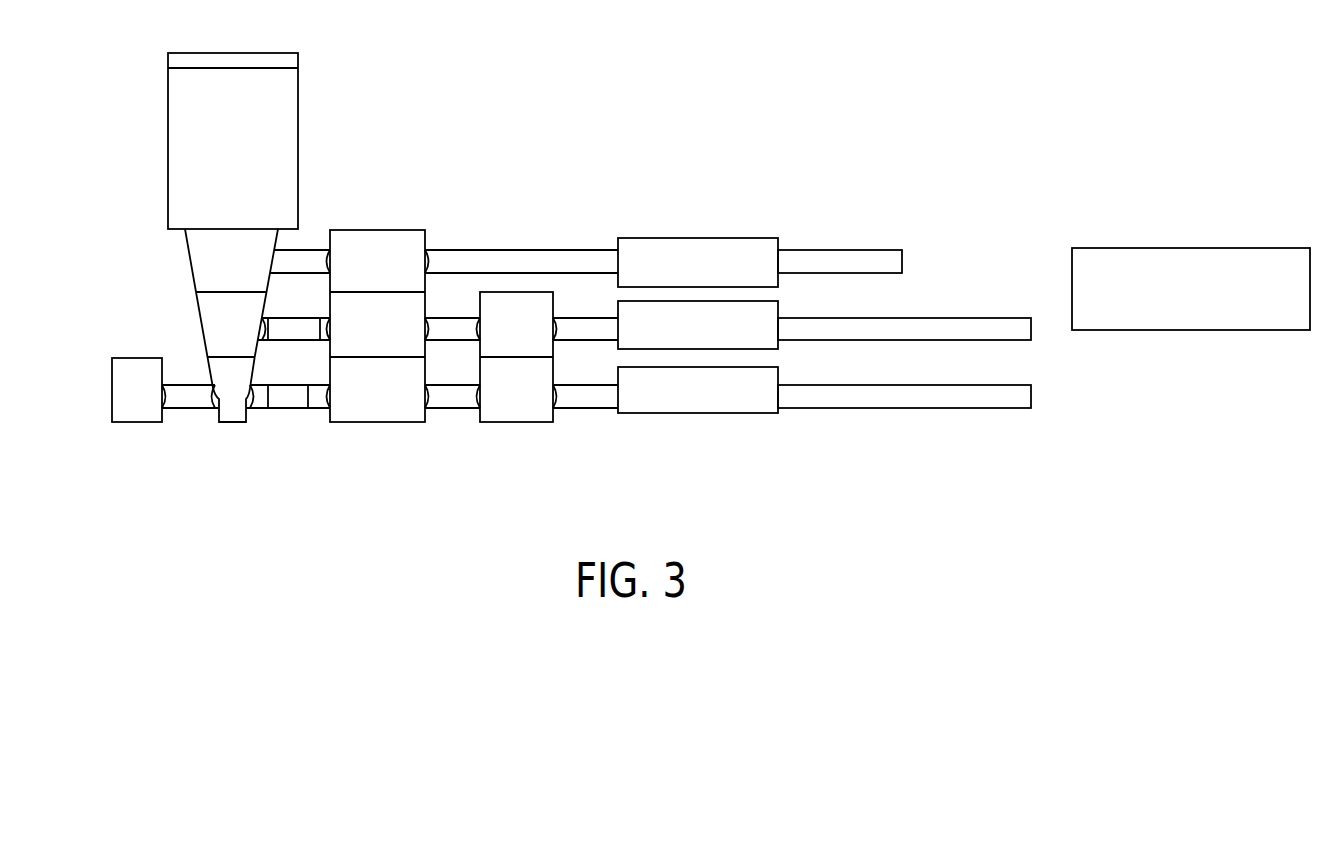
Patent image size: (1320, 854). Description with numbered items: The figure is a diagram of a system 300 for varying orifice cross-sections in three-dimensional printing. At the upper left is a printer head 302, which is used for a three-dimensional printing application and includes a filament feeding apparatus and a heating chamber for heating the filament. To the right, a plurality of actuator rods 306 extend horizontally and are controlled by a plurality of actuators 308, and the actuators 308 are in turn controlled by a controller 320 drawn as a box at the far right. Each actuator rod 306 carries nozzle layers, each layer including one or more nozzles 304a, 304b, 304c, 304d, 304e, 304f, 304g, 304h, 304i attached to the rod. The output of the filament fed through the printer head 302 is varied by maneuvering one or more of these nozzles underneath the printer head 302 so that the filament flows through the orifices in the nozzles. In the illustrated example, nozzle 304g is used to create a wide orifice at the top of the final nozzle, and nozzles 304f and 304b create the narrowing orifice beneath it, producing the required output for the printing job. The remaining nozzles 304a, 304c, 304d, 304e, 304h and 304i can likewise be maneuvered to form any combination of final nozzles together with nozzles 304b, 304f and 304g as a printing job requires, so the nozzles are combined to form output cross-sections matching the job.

The system 300 is at (980, 72).
The printer head 302 is at (181, 131).
The nozzle 304a is at (136, 413).
The nozzle 304b is at (229, 413).
The nozzle 304c is at (365, 413).
The nozzle 304d is at (495, 413).
The nozzle 304e is at (513, 346).
The nozzle 304f is at (213, 335).
The nozzle 304g is at (210, 275).
The nozzle 304h is at (413, 311).
The nozzle 304i is at (380, 253).
The actuator rod 306 is at (577, 260).
The actuator 308 is at (753, 394).
The controller 320 is at (1255, 265).